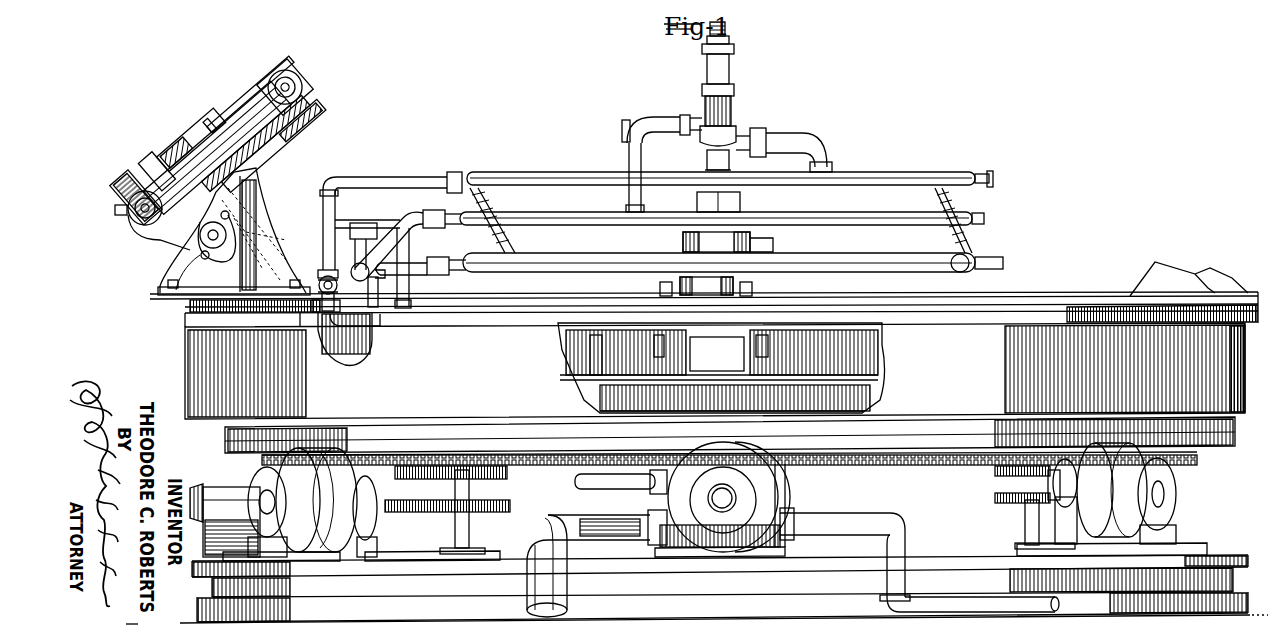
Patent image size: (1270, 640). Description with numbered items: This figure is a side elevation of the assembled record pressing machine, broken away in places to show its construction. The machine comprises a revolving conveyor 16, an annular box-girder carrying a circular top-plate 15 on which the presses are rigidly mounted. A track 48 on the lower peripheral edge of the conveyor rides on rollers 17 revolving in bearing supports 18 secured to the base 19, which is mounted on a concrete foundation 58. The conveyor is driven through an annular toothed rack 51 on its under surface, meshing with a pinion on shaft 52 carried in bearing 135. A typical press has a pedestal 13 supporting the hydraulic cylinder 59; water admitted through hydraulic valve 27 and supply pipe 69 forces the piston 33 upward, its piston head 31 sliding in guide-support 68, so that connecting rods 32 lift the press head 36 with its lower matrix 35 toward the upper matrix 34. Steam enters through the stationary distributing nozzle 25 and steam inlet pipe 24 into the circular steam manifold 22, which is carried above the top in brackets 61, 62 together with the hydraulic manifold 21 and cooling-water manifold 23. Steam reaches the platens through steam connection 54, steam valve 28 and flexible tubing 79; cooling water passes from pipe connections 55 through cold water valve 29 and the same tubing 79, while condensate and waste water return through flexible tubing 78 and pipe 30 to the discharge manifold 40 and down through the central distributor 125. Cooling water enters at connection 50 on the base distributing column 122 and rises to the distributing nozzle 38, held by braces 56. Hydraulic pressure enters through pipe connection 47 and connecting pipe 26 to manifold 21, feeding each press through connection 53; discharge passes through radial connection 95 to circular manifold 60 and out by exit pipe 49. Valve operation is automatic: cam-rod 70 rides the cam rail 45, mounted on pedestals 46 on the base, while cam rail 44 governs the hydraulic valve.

The pedestal standard 13 is at (234, 231).
The top-plate 15 is at (1058, 296).
The conveyor 16 is at (715, 364).
The rollers 17 is at (711, 497).
The bearing supports 18 is at (712, 507).
The base 19 is at (720, 588).
The hydraulic manifold 21 is at (538, 180).
The steam header or manifold 22 is at (556, 224).
The cooling water manifold 23 is at (563, 259).
The steam inlet pipe 24 is at (657, 120).
The steam distributing nozzle 25 is at (735, 112).
The connecting pipe 26 is at (742, 143).
The hydraulic valve 27 is at (318, 278).
The steam valve 28 is at (338, 295).
The cold water valve 29 is at (392, 250).
The pipe 30 is at (350, 222).
The piston head 31 is at (292, 66).
The connecting rods 32 is at (226, 148).
The piston 33 is at (240, 96).
The upper matrix 34 is at (156, 150).
The lower matrix 35 is at (130, 165).
The press head 36 is at (152, 237).
The distributing nozzle 38 is at (726, 263).
The discharge manifold 40 is at (719, 393).
The cam rail 44 is at (508, 472).
The cam rail 45 is at (512, 504).
The pedestals 46 is at (460, 492).
The hydraulic pipe connection 47 is at (850, 525).
The track 48 is at (730, 435).
The exit pipe 49 is at (609, 486).
The cooling water connection 50 is at (597, 563).
The annular toothed rack 51 is at (563, 466).
The shaft 52 is at (232, 488).
The connection 53 is at (405, 176).
The steam connection 54 is at (420, 212).
The pipe connections 55 is at (428, 260).
The braces 56 is at (672, 289).
The concrete foundation 58 is at (402, 623).
The cylinder 59 is at (196, 128).
The circular manifold 60 is at (812, 330).
The bracket 61 is at (518, 250).
The bracket 62 is at (947, 220).
The guide-support 68 is at (310, 126).
The supply pipe 69 is at (318, 312).
The cam-rod 70 is at (372, 345).
The flexible tubing 78 is at (280, 230).
The flexible tubing 79 is at (353, 246).
The radial connection 95 is at (382, 330).
The base distributing column 122 is at (788, 470).
The central distributor 125 is at (717, 354).
The bearing 135 is at (196, 486).